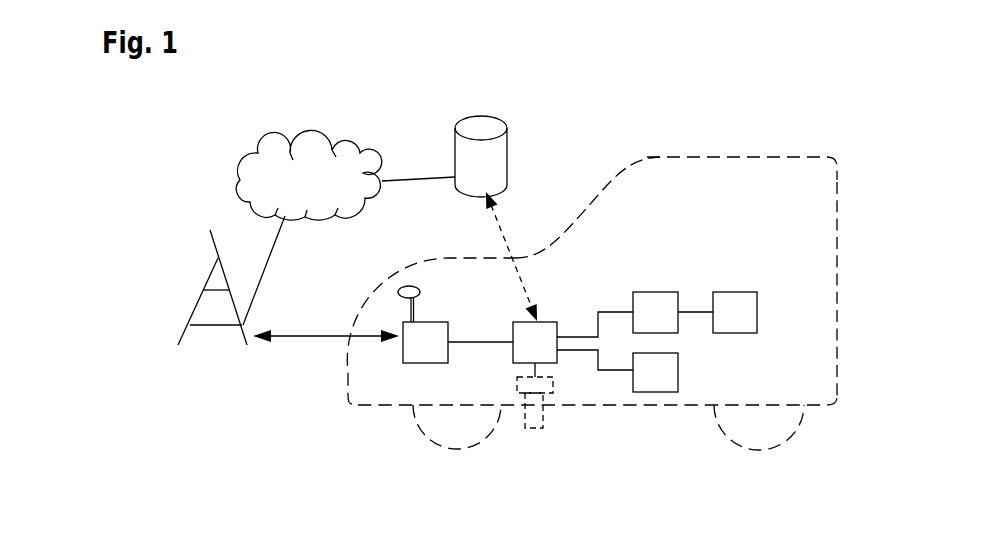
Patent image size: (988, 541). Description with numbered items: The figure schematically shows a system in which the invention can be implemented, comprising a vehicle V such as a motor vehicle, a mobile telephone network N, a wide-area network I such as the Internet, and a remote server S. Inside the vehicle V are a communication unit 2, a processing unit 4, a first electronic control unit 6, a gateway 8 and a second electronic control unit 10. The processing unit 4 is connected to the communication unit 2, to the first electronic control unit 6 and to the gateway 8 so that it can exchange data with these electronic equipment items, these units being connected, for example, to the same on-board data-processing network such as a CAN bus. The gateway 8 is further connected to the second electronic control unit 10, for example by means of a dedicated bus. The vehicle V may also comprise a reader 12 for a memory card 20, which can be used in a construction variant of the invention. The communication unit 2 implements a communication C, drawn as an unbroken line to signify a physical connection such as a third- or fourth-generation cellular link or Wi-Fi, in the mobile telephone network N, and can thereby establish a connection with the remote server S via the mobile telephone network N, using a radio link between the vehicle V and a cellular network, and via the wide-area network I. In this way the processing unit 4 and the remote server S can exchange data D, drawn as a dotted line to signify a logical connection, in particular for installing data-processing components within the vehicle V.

The communication unit 2 is at (423, 324).
The processing unit 4 is at (535, 342).
The first electronic control unit 6 is at (655, 372).
The gateway 8 is at (655, 312).
The second electronic control unit 10 is at (735, 312).
The reader 12 is at (553, 385).
The memory card 20 is at (535, 428).
The vehicle V is at (855, 194).
The wide-area network I is at (278, 133).
The remote server S is at (524, 165).
The mobile telephone network N is at (166, 307).
The communication C is at (326, 322).
The data D is at (511, 256).